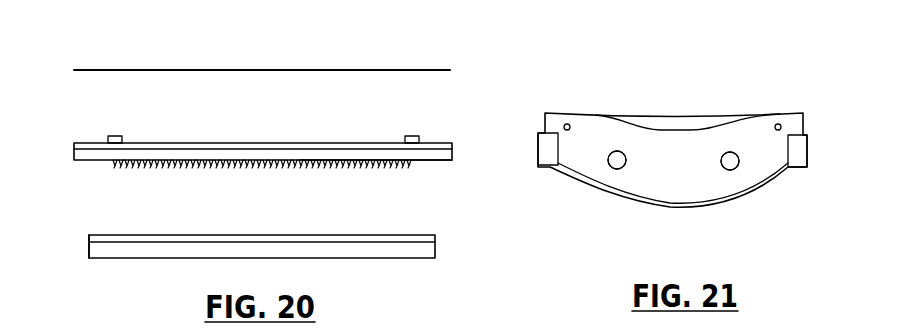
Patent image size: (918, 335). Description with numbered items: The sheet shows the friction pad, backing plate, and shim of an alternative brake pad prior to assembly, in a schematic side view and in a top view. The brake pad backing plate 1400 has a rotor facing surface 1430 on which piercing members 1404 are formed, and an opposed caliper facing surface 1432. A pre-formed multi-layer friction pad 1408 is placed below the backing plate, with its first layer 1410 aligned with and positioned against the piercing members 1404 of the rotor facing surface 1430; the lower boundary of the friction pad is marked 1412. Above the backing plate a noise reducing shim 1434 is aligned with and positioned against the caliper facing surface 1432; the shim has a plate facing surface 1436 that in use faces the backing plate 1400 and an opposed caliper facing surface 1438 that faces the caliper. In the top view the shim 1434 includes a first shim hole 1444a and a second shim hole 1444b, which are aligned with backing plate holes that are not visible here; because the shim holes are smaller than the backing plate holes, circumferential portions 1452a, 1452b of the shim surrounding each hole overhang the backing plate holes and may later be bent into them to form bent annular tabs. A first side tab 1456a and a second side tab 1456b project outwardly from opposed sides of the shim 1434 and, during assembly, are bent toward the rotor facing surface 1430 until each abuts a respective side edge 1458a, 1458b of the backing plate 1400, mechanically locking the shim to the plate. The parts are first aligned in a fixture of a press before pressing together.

In FIG. 20, the brake pad backing plate 1400 is at (289, 160).
In FIG. 21, the brake pad backing plate 1400 is at (706, 147).
In FIG. 20, the piercing members 1404 is at (115, 168).
In FIG. 20, the friction pad 1408 is at (72, 245).
In FIG. 20, the first layer 1410 is at (226, 260).
In FIG. 20, the base plate lower surface 1412 is at (423, 248).
In FIG. 20, the rotor facing surface 1430 is at (473, 207).
In FIG. 20, the caliper facing surface 1432 is at (252, 143).
In FIG. 20, the shim 1434 is at (418, 68).
In FIG. 21, the shim 1434 is at (768, 165).
In FIG. 20, the plate facing surface 1436 is at (318, 72).
In FIG. 20, the caliper facing surface 1438 is at (248, 68).
In FIG. 21, the first shim hole 1444a is at (617, 158).
In FIG. 21, the second shim hole 1444b is at (730, 159).
In FIG. 21, the circumferential portion 1452a is at (627, 174).
In FIG. 21, the circumferential portion 1452b is at (727, 175).
In FIG. 21, the first side tab 1456a is at (543, 114).
In FIG. 21, the second side tab 1456b is at (803, 117).
In FIG. 21, the side edge 1458a is at (548, 137).
In FIG. 21, the side edge 1458b is at (796, 132).